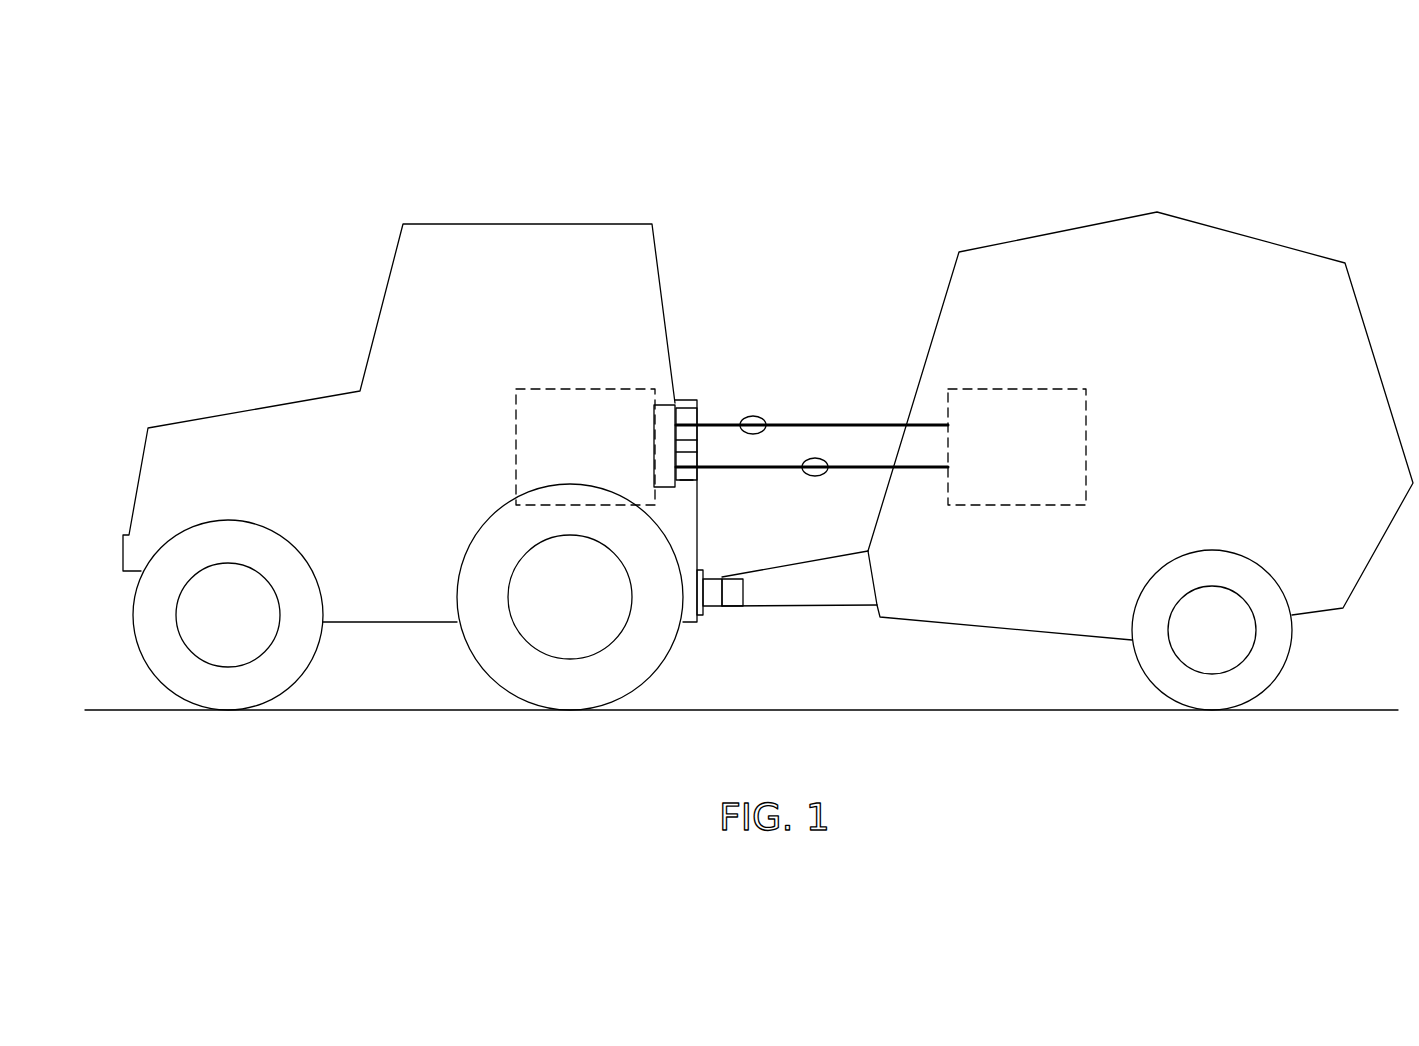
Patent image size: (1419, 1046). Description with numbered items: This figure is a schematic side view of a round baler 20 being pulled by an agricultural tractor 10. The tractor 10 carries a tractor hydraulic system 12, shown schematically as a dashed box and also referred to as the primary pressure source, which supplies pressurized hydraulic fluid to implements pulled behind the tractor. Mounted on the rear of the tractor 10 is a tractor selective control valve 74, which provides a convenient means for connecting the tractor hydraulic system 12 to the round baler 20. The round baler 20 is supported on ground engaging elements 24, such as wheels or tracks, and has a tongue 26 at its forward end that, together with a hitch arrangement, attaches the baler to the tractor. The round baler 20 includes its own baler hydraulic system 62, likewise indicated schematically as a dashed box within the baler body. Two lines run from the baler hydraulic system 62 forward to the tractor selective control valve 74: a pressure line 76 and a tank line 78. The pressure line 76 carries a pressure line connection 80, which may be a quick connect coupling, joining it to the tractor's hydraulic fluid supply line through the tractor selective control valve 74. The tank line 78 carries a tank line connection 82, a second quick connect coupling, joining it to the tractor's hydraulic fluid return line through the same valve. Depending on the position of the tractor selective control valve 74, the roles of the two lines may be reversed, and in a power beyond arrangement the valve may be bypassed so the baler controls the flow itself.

The agricultural tractor 10 is at (582, 147).
The round baler 20 is at (1253, 168).
The tractor hydraulic system 12 is at (576, 389).
The baler hydraulic system 62 is at (1025, 389).
The ground engaging element 24 is at (1240, 681).
The tongue 26 is at (798, 583).
The tractor selective control valve 74 is at (665, 417).
The pressure line connection 80 is at (687, 417).
The pressure line 76 is at (753, 416).
The tank line 78 is at (815, 476).
The tank line connection 82 is at (688, 478).